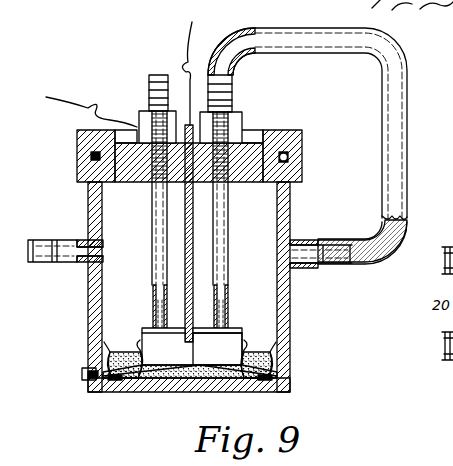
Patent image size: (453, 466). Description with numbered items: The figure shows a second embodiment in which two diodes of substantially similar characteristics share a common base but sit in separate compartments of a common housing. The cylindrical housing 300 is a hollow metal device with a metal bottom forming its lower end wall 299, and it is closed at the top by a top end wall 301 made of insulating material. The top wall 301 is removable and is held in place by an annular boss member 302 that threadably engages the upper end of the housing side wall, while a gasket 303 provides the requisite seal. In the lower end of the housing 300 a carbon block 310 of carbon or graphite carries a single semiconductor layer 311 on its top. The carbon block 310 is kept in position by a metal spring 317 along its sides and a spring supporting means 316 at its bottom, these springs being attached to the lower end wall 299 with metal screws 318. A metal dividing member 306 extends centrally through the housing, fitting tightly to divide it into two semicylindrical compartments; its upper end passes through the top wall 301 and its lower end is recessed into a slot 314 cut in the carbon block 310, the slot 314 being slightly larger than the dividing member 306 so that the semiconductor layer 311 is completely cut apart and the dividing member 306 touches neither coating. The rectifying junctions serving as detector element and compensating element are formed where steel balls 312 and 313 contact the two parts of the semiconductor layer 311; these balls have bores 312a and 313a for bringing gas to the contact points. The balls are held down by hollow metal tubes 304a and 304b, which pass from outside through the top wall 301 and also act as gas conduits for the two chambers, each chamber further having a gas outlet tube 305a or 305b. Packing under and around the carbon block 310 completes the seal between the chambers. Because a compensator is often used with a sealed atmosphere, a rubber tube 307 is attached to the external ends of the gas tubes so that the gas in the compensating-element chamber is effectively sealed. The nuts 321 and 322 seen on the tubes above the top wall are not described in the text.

The lower end wall 299 is at (250, 386).
The cylindrical housing 300 is at (292, 296).
The top end wall 301 is at (77, 144).
The annular boss member 302 is at (302, 138).
The gasket 303 is at (289, 166).
The hollow metal tube 304a is at (152, 266).
The hollow metal tube 304b is at (236, 102).
The gas outlet tube 305a is at (66, 240).
The gas outlet tube 305b is at (304, 242).
The metal dividing member 306 is at (193, 218).
The rubber tube 307 is at (407, 78).
The carbon block 310 is at (186, 368).
The semiconductor layer 311 is at (157, 344).
The steel ball 312 is at (154, 328).
The bore 312a is at (152, 318).
The steel ball 313 is at (229, 331).
The bore 313a is at (228, 320).
The slot 314 is at (188, 340).
The spring supporting means 316 is at (150, 376).
The metal spring 317 is at (104, 342).
The metal screws 318 is at (110, 368).
The nut 321 is at (139, 120).
The nut 322 is at (240, 128).